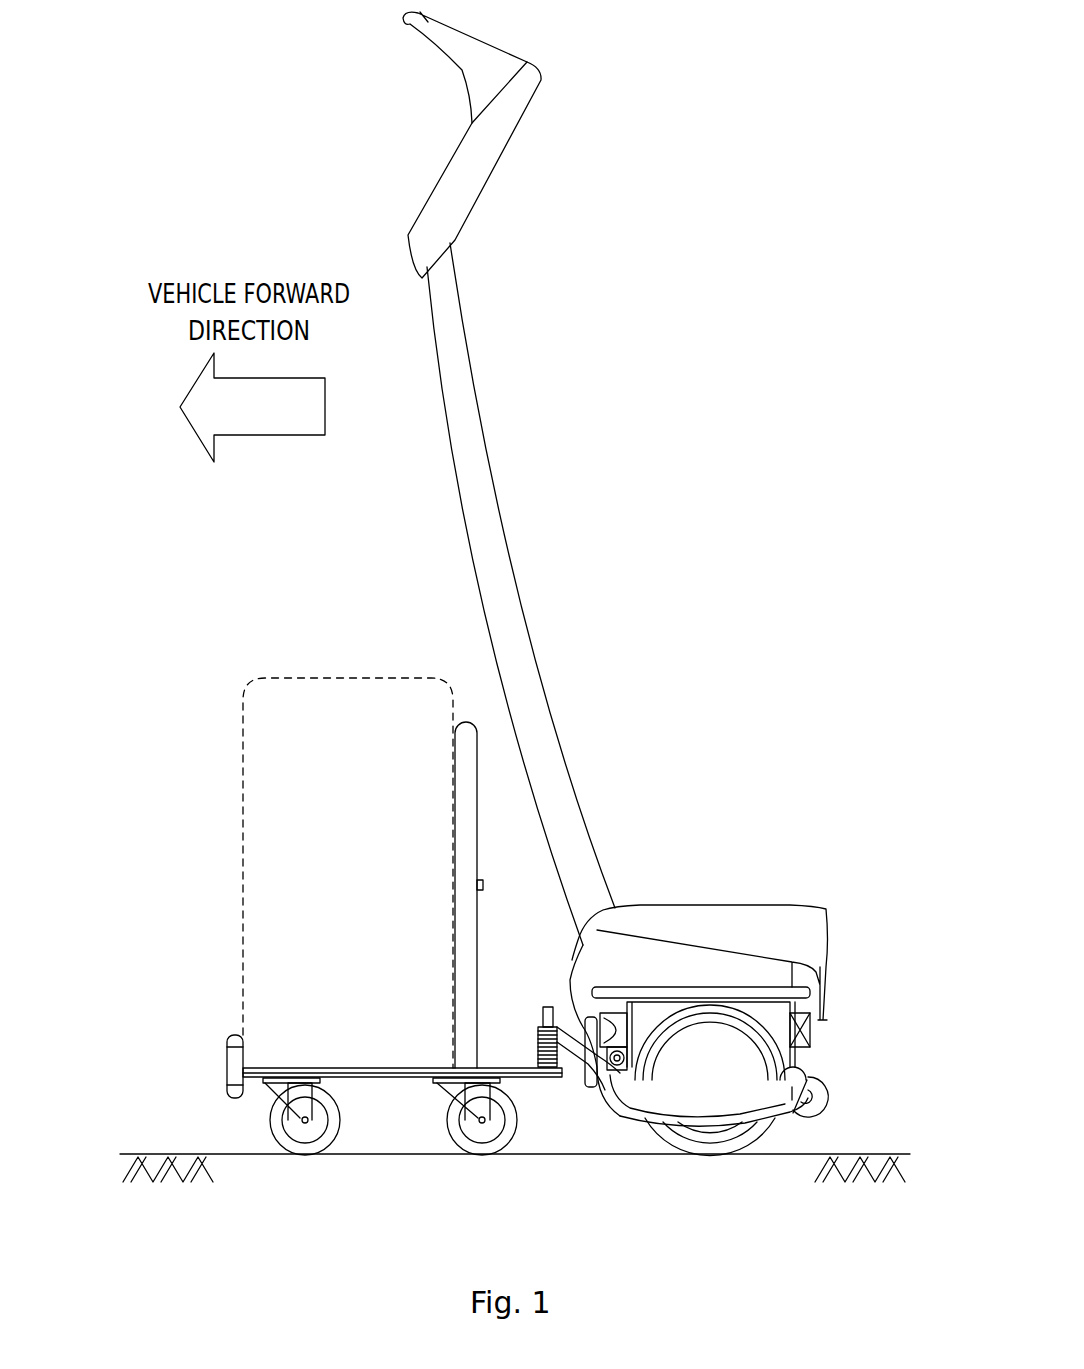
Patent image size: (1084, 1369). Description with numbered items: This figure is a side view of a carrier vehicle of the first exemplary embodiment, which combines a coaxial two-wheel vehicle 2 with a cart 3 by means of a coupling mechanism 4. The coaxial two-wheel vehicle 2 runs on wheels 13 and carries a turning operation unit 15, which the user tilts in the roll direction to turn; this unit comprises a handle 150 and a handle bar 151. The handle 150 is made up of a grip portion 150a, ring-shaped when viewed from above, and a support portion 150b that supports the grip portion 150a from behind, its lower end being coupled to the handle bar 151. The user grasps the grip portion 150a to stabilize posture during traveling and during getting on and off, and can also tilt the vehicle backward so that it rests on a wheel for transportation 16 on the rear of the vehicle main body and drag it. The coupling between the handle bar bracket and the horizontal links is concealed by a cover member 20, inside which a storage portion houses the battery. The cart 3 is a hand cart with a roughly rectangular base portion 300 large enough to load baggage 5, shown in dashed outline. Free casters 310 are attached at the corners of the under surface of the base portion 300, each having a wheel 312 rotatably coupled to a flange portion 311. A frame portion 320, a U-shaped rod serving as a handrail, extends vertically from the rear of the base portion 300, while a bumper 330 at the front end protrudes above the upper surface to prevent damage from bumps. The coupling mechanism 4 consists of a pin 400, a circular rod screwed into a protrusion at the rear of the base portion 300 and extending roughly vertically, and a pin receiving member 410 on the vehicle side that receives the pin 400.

The coaxial two-wheel vehicle 2 is at (738, 1008).
The cart 3 is at (352, 943).
The coupling mechanism 4 is at (573, 1076).
The baggage 5 is at (250, 802).
The wheels 13 is at (715, 1157).
The turning operation unit 15 is at (513, 478).
The wheel for transportation 16 is at (828, 1105).
The cover member 20 is at (795, 923).
The handle 150 is at (513, 145).
The grip portion 150a is at (445, 42).
The support portion 150b is at (466, 174).
The handle bar 151 is at (474, 412).
The base portion 300 is at (395, 1080).
The free casters 310 is at (282, 1144).
The flange portion 311 is at (246, 1084).
The wheel 312 is at (328, 1154).
The frame portion 320 is at (463, 722).
The bumper 330 is at (227, 1068).
The pin 400 is at (547, 1005).
The pin receiving member 410 is at (599, 1092).